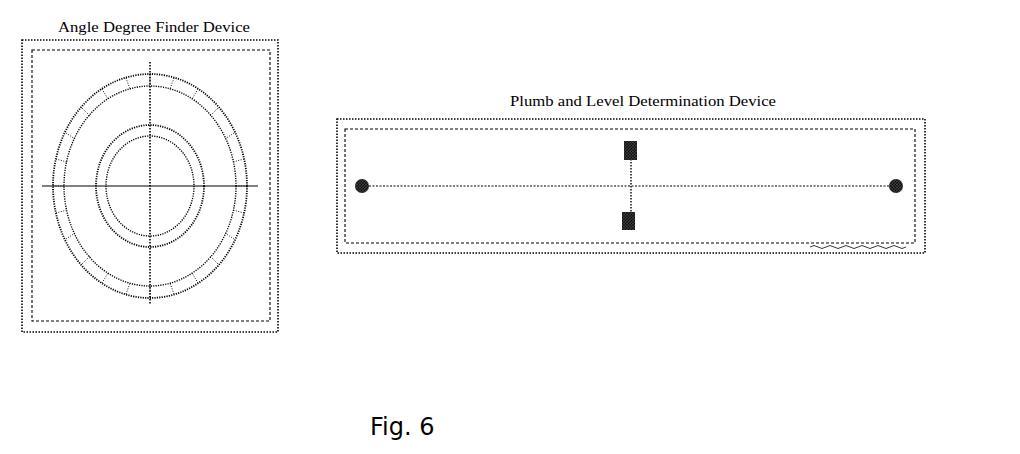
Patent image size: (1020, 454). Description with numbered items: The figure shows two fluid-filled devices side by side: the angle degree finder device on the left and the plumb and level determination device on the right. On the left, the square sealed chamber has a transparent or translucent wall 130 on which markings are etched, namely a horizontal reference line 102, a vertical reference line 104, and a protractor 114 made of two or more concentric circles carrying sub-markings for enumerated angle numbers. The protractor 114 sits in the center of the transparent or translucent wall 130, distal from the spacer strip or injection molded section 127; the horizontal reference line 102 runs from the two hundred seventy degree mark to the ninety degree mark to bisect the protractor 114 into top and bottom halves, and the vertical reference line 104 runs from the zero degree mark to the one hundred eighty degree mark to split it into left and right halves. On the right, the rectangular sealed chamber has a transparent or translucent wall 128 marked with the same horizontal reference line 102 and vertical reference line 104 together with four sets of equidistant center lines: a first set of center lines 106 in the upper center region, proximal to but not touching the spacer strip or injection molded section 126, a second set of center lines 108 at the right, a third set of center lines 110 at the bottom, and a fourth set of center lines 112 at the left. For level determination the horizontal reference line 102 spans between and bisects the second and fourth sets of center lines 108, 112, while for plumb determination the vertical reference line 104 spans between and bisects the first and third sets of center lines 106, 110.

The horizontal reference line 102 is at (50, 186).
The vertical reference line 104 is at (150, 69).
The first set of center lines 106 is at (620, 143).
The second set of center lines 108 is at (888, 183).
The third set of center lines 110 is at (634, 226).
The fourth set of center lines 112 is at (366, 178).
The protractor 114 is at (203, 268).
The spacer strip or injection molded section 126 is at (463, 246).
The spacer strip or injection molded section 127 is at (268, 326).
The transparent or translucent wall 128 is at (545, 238).
The transparent or translucent wall 130 is at (107, 313).